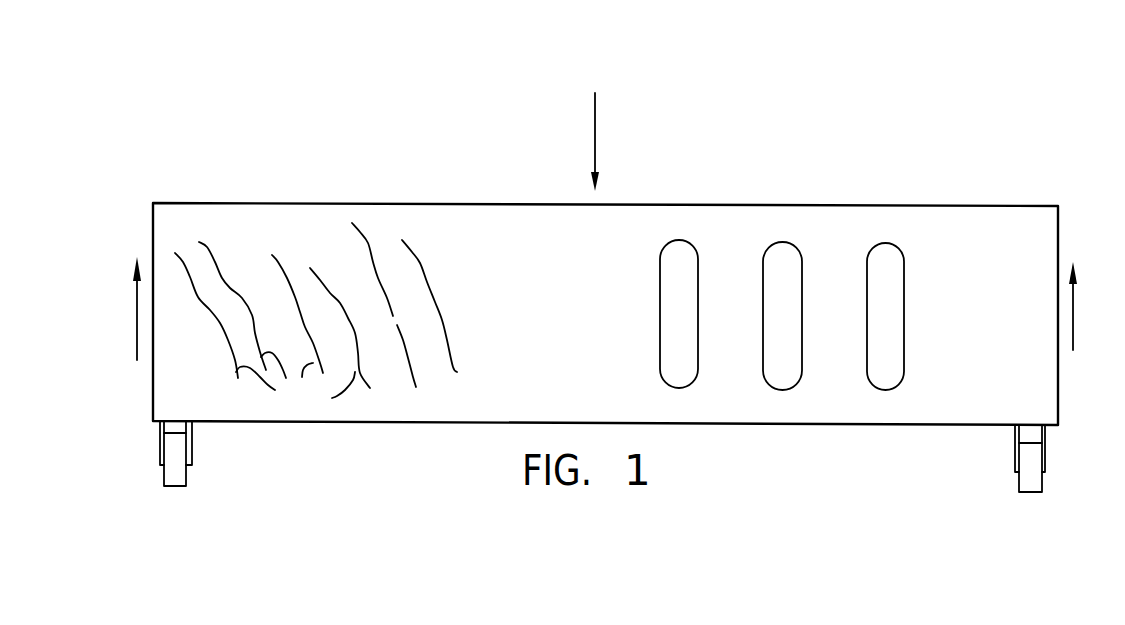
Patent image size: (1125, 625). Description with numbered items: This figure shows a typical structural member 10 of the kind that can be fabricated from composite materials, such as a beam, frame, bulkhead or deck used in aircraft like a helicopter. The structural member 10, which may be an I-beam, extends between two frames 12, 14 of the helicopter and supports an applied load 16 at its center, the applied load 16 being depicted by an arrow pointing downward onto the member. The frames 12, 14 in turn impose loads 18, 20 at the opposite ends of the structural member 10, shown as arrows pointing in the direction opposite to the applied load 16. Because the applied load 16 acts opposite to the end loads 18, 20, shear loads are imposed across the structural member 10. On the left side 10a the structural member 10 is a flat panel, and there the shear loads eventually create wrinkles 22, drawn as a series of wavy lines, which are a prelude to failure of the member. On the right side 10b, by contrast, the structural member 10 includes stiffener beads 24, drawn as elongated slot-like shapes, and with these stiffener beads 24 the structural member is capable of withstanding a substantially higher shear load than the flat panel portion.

The structural member 10 is at (963, 197).
The left side of structural member 10a is at (297, 223).
The right side of structural member 10b is at (825, 218).
The frame 12 is at (185, 470).
The frame 14 is at (1024, 479).
The applied load 16 is at (596, 147).
The load 18 is at (136, 306).
The load 20 is at (1075, 329).
The wrinkles 22 is at (412, 382).
The stiffener beads 24 is at (877, 378).